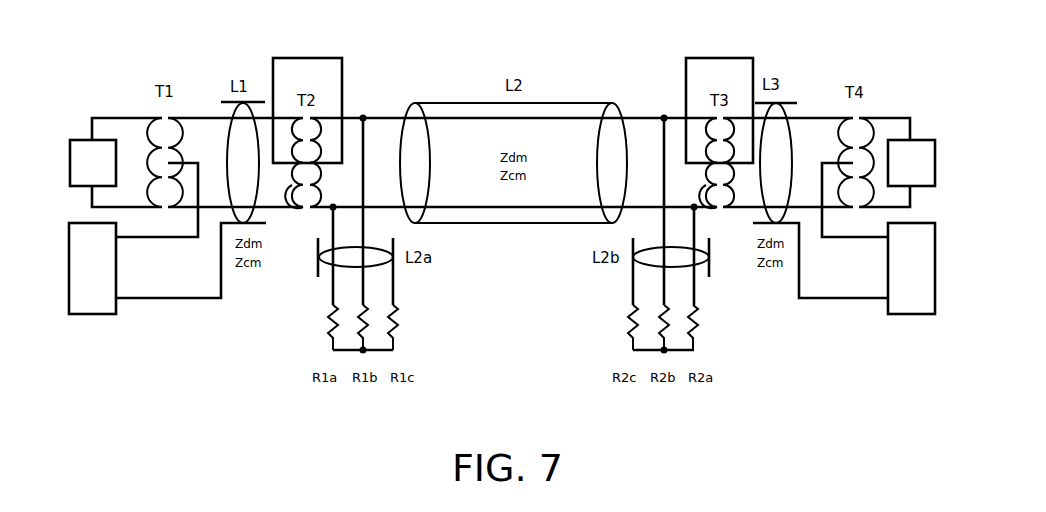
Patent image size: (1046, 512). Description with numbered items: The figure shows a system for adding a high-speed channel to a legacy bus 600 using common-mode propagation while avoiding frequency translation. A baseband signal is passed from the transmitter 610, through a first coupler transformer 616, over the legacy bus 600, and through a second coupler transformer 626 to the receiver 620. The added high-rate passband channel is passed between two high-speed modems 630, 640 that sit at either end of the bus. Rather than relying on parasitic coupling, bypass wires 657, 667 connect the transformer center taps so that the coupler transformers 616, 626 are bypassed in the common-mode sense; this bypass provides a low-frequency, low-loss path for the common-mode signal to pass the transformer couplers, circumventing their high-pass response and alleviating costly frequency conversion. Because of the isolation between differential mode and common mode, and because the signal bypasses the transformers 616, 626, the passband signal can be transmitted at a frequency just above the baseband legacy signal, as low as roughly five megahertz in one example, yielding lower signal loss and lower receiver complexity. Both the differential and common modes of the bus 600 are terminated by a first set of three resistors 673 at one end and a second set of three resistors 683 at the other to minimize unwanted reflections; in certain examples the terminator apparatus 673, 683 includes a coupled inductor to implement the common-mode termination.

The legacy bus 600 is at (642, 118).
The transmitter 610 is at (69, 151).
The transformer T2 616 is at (300, 200).
The receiver 620 is at (937, 155).
The transformer T3 626 is at (718, 190).
The high-speed modem 630 is at (83, 315).
The high-speed modem 640 is at (915, 315).
The bypass wire 657 is at (302, 57).
The bypass wire 667 is at (718, 58).
The resistors R1a-R1c 673 is at (363, 358).
The resistors R2a-R2c 683 is at (663, 358).